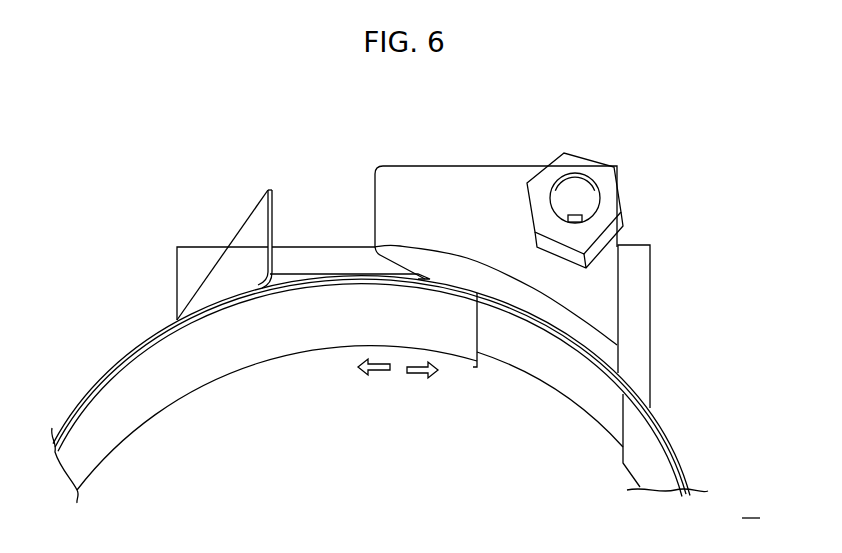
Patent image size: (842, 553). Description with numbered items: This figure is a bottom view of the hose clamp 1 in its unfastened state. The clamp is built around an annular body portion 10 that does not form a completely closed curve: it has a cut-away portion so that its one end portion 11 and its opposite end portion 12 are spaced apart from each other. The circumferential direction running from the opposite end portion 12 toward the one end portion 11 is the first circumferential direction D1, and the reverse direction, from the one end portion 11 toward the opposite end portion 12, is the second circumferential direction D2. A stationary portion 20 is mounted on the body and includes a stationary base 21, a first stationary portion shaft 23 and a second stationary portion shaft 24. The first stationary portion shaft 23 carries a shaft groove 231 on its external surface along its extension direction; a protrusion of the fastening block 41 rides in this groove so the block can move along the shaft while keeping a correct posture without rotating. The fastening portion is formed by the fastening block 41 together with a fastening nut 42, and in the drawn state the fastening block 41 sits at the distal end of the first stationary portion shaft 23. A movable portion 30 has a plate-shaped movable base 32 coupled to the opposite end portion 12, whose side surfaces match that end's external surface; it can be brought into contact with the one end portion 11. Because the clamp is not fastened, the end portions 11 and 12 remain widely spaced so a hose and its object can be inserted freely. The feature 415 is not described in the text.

The hose clamp 1 is at (751, 508).
The body portion 10 is at (147, 440).
The one end portion 11 is at (468, 360).
The opposite end portion 12 is at (628, 462).
The stationary portion 20 is at (206, 225).
The stationary base 21 is at (268, 188).
The first stationary portion shaft 23 is at (583, 192).
The shaft groove 231 is at (573, 192).
The second stationary portion shaft 24 is at (296, 247).
The movable portion 30 is at (684, 446).
The movable base 32 is at (575, 347).
The fastening block 41 is at (380, 200).
The arm portion 415 is at (573, 306).
The fastening nut 42 is at (618, 227).
The first circumferential direction D1 is at (371, 376).
The second circumferential direction D2 is at (416, 378).